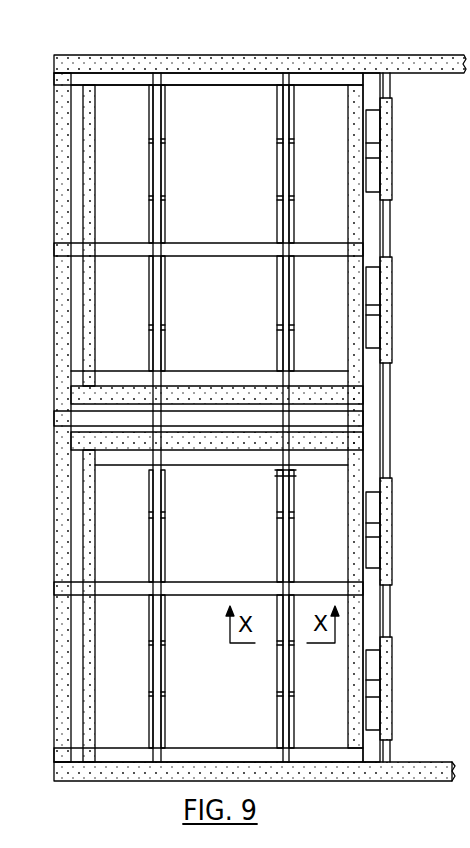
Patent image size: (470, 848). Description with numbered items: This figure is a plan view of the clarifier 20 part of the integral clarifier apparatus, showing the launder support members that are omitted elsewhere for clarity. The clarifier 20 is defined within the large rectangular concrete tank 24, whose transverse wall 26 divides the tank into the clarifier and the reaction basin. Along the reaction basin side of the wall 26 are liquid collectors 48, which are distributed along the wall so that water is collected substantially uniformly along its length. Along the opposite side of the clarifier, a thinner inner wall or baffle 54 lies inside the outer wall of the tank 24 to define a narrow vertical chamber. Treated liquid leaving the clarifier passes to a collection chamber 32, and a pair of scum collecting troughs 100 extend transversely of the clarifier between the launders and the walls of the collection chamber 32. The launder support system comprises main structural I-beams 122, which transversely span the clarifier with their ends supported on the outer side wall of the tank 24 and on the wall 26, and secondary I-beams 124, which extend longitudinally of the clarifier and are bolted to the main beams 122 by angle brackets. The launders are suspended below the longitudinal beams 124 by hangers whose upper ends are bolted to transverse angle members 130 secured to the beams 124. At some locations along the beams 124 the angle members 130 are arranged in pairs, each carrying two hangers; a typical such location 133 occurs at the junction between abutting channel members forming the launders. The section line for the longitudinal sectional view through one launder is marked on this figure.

The clarifier 20 is at (335, 300).
The concrete tank 24 is at (440, 82).
The transverse wall 26 is at (357, 181).
The collection chamber 32 is at (328, 408).
The liquid collector 48 is at (400, 165).
The inner wall or baffle 54 is at (88, 178).
The scum collecting trough 100 is at (245, 380).
The main structural I-beam 122 is at (263, 87).
The secondary I-beam 124 is at (155, 350).
The transverse angle member 130 is at (288, 523).
The paired angle member location 133 is at (262, 517).